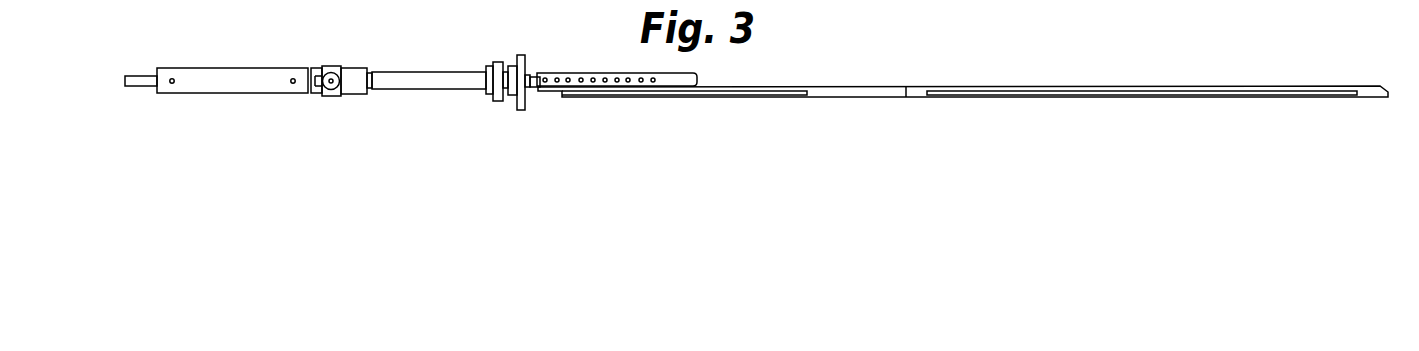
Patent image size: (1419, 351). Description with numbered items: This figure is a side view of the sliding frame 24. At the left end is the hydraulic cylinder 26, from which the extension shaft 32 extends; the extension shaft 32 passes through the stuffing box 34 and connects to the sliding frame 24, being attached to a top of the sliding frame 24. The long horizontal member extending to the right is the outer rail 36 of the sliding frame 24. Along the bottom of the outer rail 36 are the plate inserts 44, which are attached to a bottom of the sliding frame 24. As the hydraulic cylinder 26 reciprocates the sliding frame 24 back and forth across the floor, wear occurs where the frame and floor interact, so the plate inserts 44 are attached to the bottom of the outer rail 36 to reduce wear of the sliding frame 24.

The sliding frame 24 is at (1057, 58).
The hydraulic cylinder 26 is at (213, 78).
The extension shaft 32 is at (430, 76).
The stuffing box 34 is at (509, 71).
The outer rail 36 is at (868, 85).
The plate inserts 44 is at (762, 97).